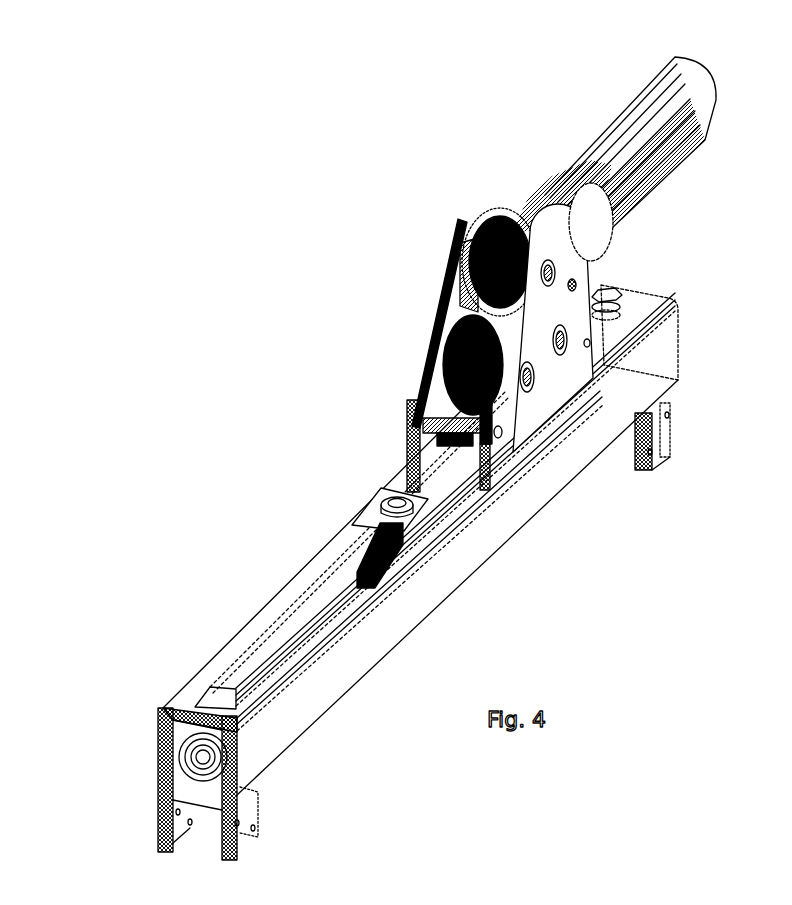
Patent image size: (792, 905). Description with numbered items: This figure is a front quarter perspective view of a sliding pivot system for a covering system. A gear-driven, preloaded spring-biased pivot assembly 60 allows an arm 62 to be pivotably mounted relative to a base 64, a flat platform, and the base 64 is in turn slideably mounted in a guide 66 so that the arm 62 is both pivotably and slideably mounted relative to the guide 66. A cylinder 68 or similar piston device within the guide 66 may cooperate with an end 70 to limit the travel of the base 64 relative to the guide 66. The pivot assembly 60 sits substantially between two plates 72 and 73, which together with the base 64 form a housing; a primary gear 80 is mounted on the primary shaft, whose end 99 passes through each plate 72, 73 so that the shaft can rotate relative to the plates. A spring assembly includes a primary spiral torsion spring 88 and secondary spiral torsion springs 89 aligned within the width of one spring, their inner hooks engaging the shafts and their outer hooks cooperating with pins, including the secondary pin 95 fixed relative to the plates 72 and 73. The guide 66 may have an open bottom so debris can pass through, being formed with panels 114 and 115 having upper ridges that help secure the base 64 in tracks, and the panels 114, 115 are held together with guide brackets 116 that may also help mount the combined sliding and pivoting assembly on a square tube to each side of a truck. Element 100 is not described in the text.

The pivot assembly 60 is at (461, 275).
The arm 62 is at (673, 92).
The base 64 is at (413, 480).
The guide 66 is at (307, 617).
The cylinder 68 is at (363, 557).
The end 70 is at (187, 767).
The plate 72 is at (567, 264).
The plate 73 is at (450, 317).
The primary gear 80 is at (530, 222).
The primary spiral torsion spring 88 is at (487, 230).
The secondary spiral torsion spring 89 is at (448, 378).
The secondary pin 95 is at (417, 430).
The end 99 is at (562, 343).
The coupling 100 is at (598, 231).
The panel 114 is at (662, 343).
The panel 115 is at (230, 643).
The guide bracket 116 is at (162, 803).